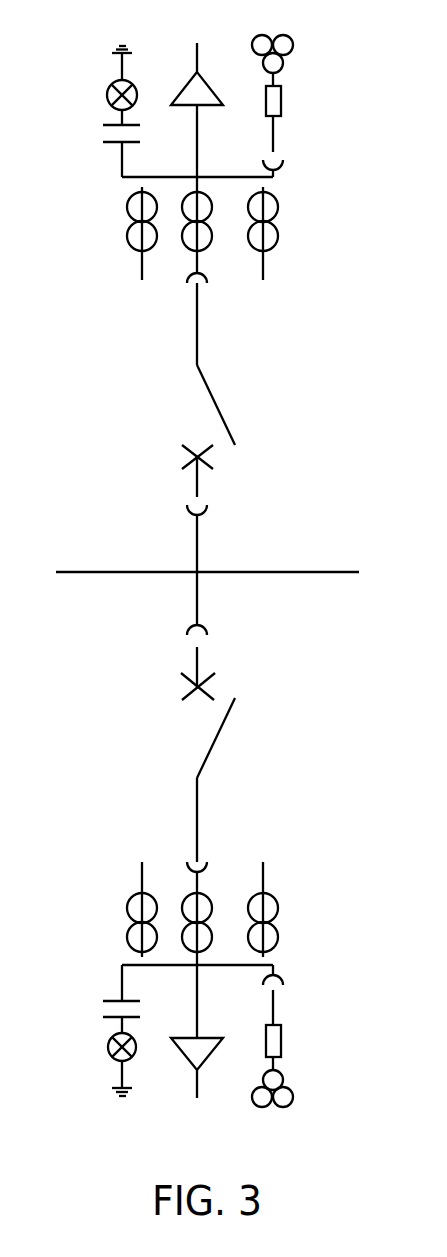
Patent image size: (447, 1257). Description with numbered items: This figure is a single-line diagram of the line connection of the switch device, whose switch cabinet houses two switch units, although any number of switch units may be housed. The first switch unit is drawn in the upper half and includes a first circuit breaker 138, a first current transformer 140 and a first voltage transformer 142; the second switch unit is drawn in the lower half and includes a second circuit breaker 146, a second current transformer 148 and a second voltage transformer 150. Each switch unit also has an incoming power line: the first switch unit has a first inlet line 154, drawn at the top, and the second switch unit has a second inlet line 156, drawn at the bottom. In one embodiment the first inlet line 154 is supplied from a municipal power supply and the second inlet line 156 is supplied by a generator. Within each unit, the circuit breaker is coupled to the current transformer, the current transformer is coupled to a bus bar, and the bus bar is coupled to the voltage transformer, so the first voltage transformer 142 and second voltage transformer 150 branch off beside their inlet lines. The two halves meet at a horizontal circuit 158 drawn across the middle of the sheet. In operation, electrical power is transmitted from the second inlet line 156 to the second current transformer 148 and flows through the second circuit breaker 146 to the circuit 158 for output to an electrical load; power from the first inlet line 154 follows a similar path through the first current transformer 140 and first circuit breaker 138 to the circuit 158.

The first circuit breaker 138 is at (216, 402).
The first current transformer 140 is at (127, 230).
The first voltage transformer 142 is at (284, 60).
The second circuit breaker 146 is at (213, 748).
The second current transformer 148 is at (127, 908).
The second voltage transformer 150 is at (285, 1090).
The first inlet line 154 is at (192, 60).
The second inlet line 156 is at (192, 1075).
The circuit 158 is at (98, 569).